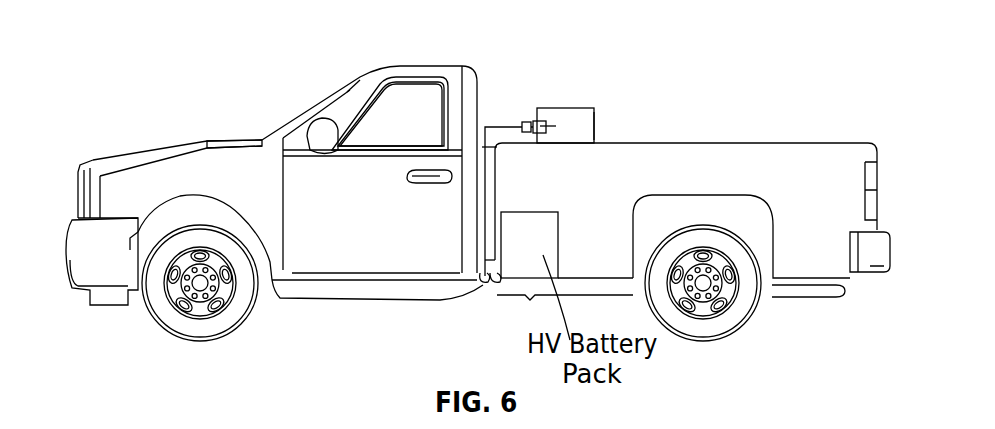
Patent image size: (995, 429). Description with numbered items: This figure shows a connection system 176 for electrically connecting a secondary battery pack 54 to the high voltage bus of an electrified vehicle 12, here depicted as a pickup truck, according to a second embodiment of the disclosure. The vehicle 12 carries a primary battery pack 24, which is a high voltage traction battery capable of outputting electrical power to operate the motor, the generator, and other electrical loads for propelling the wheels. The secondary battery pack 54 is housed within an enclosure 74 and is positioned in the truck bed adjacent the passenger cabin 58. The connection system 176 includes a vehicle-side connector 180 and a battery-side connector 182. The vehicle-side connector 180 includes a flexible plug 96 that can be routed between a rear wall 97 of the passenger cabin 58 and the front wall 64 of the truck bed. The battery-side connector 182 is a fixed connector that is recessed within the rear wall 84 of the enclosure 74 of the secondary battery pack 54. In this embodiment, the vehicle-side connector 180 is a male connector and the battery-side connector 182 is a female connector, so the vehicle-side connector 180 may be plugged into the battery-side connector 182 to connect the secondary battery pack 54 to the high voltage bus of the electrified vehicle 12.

The electrified vehicle 12 is at (416, 36).
The passenger cabin 58 is at (413, 128).
The vehicle-side connector 180 is at (490, 118).
The connection system 176 is at (522, 110).
The rear wall 84 is at (532, 110).
The secondary battery pack 54 is at (586, 104).
The enclosure 74 is at (596, 130).
The battery-side connector 182 is at (558, 128).
The flexible plug 96 is at (497, 148).
The primary battery pack 24 is at (559, 238).
The rear wall 97 is at (483, 279).
The front wall 64 is at (495, 280).